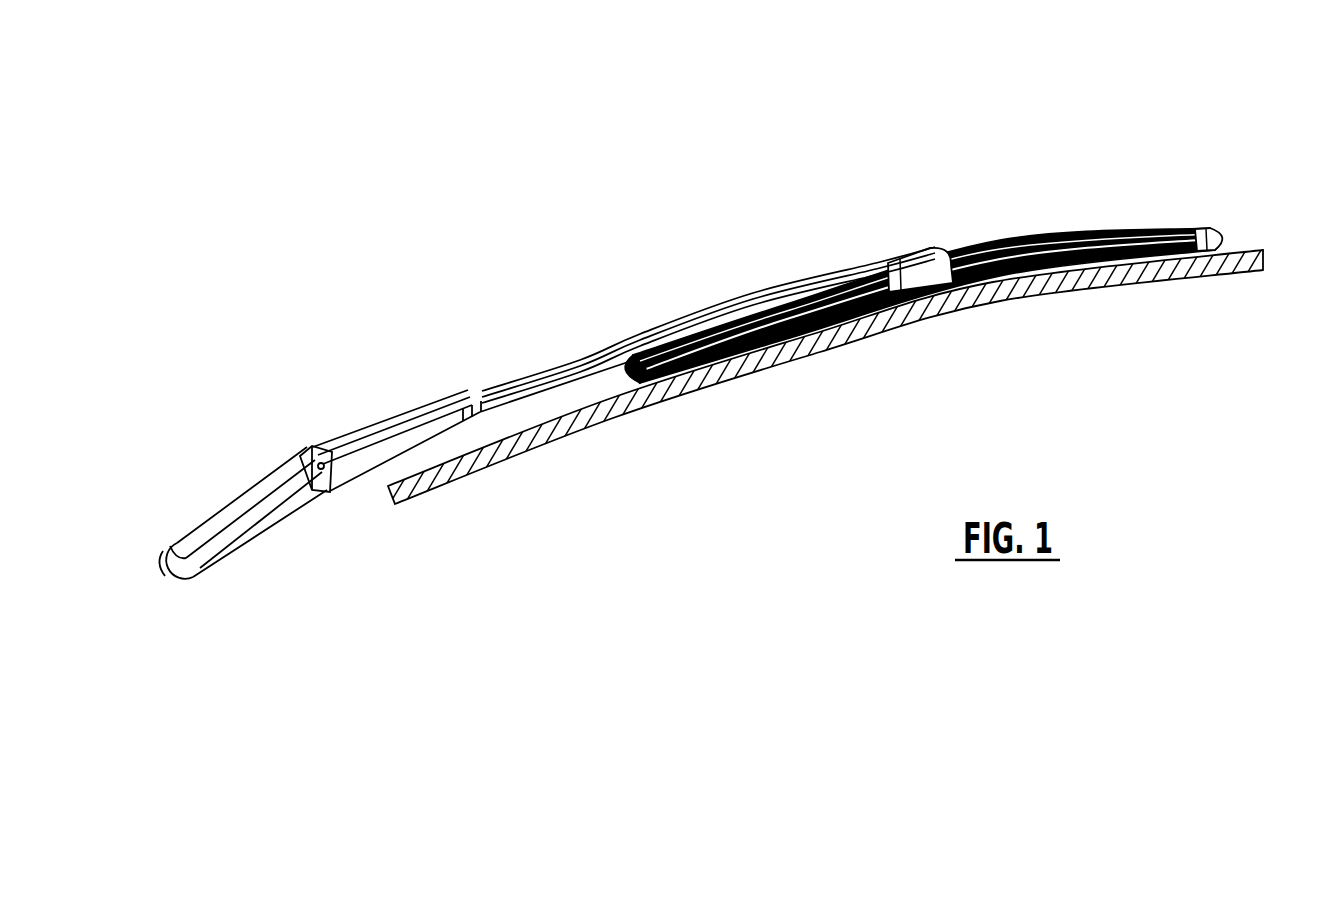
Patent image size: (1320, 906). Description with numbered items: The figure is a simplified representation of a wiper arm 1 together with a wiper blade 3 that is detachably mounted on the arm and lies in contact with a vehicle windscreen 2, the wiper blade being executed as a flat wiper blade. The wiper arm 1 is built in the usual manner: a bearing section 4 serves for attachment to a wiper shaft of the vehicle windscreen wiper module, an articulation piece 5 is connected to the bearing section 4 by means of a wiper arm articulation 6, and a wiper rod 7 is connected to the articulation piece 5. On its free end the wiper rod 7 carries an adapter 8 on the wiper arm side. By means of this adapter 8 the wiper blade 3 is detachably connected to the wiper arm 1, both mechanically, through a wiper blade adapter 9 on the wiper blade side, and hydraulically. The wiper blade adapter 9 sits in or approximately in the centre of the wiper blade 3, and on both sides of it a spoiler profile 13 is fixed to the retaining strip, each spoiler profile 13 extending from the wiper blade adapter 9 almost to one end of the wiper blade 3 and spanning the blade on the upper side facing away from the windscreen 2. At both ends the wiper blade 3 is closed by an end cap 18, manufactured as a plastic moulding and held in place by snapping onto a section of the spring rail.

The wiper arm 1 is at (742, 228).
The vehicle windscreen 2 is at (1040, 292).
The wiper blade 3 is at (1012, 210).
The bearing section 4 is at (240, 503).
The articulation piece 5 is at (373, 423).
The wiper arm articulation 6 is at (313, 447).
The wiper rod 7 is at (577, 352).
The adapter 8 is at (910, 253).
The wiper blade adapter 9 is at (944, 320).
The spoiler profile 13 is at (761, 306).
The end cap 18 is at (654, 392).